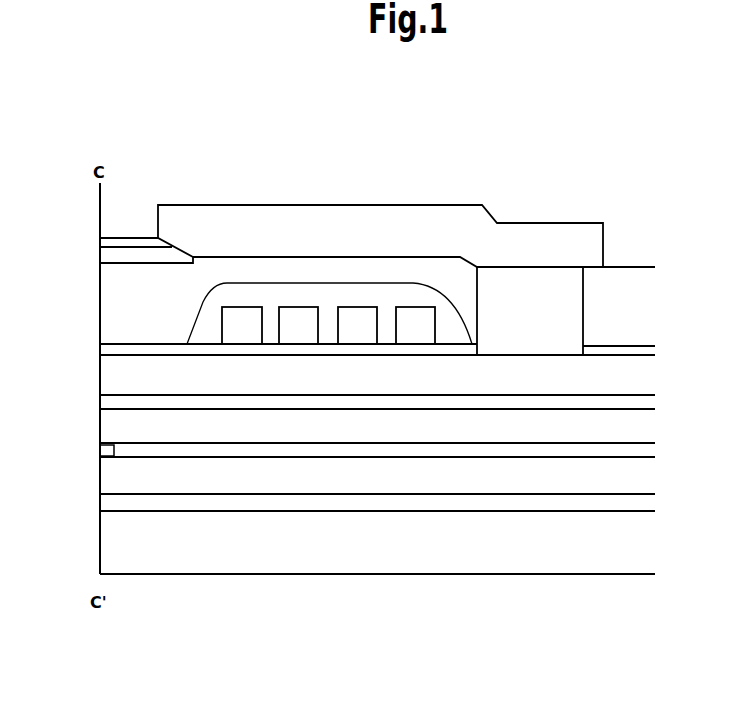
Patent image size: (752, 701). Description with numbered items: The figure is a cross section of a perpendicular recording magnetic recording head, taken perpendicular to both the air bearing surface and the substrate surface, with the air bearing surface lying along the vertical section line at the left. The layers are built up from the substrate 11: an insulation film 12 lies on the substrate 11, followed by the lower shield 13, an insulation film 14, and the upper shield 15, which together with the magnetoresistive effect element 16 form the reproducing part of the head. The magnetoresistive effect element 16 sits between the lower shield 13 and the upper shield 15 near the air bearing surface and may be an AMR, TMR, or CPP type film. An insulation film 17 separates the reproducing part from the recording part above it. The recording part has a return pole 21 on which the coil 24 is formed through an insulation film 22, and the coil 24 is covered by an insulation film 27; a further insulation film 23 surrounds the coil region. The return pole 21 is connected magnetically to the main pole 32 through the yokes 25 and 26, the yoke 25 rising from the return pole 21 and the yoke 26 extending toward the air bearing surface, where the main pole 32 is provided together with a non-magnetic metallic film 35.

The substrate 11 is at (620, 548).
The insulation film 12 is at (620, 510).
The lower shield 13 is at (620, 482).
The insulation film 14 is at (620, 455).
The upper shield 15 is at (620, 428).
The magnetoresistive effect element 16 is at (100, 450).
The insulation film 17 is at (620, 403).
The return pole 21 is at (620, 378).
The insulation film 22 is at (105, 352).
The insulation film 23 is at (105, 308).
The coil 24 is at (242, 333).
The yoke 25 is at (557, 297).
The yoke 26 is at (578, 243).
The insulation film 27 is at (445, 335).
The main pole 32 is at (100, 262).
The non-magnetic metallic film 35 is at (100, 243).